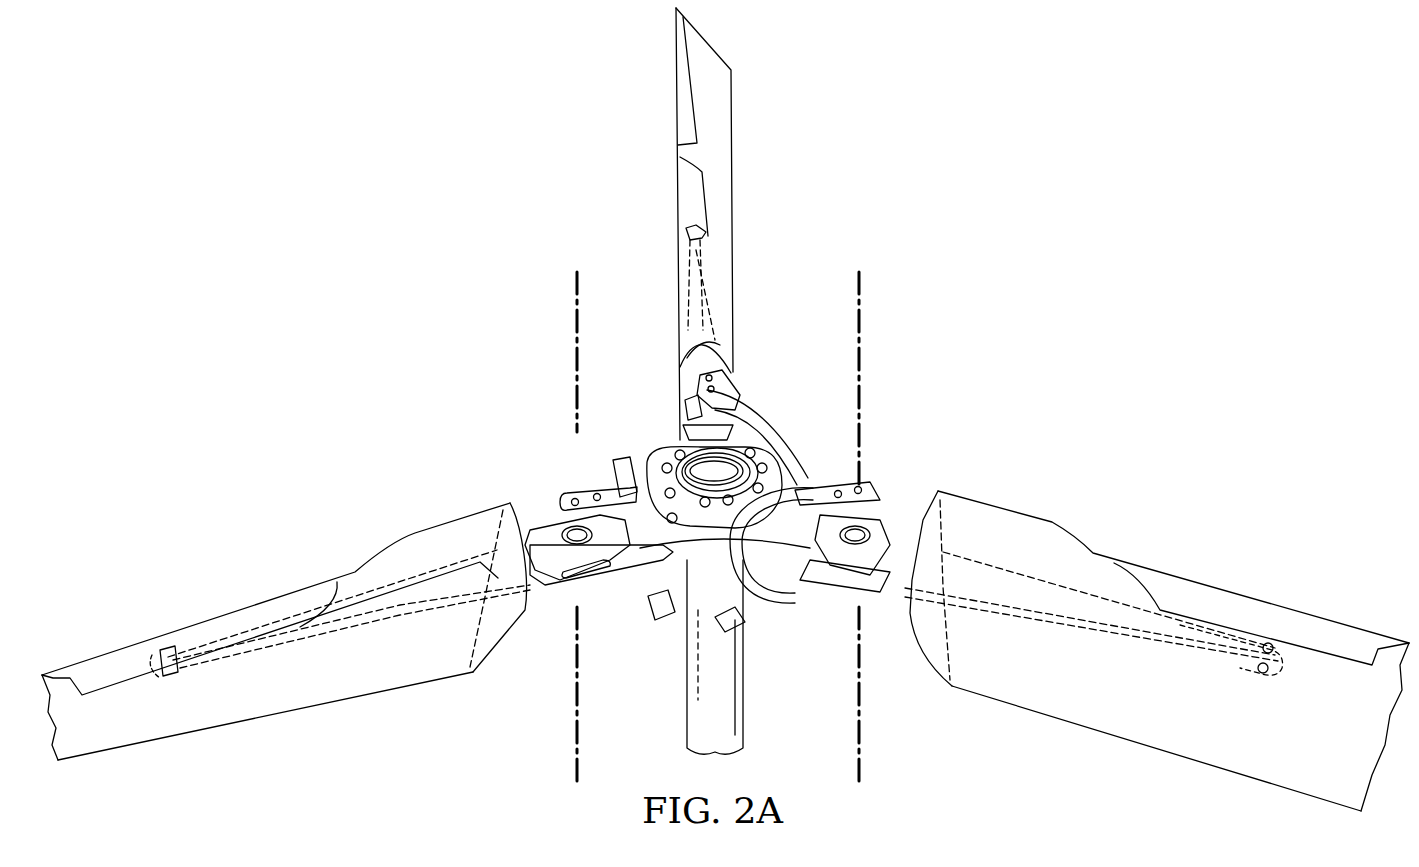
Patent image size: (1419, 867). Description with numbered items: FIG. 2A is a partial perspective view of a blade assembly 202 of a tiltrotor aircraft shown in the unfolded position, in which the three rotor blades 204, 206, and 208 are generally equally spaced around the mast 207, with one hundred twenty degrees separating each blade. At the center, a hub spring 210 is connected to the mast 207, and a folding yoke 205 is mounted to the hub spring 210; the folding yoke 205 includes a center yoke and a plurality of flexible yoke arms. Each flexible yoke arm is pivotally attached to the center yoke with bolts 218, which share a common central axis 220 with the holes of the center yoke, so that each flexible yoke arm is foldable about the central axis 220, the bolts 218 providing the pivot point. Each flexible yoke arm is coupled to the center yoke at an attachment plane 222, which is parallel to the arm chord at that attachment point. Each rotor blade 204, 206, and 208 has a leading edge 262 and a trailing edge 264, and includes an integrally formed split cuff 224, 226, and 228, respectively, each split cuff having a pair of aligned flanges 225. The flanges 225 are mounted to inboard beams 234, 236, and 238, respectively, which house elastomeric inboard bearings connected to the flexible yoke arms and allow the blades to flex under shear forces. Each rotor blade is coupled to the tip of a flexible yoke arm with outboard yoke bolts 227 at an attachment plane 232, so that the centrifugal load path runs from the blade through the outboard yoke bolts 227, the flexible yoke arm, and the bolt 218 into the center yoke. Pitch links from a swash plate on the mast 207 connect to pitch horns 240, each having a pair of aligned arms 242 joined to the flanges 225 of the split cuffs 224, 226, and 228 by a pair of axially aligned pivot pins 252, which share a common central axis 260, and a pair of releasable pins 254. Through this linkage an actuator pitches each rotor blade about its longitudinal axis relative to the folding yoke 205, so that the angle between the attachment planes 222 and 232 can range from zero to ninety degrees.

The blade assembly 202 is at (1120, 132).
The rotor blade 204 is at (128, 735).
The folding yoke 205 is at (652, 562).
The rotor blade 206 is at (733, 100).
The mast 207 is at (745, 722).
The rotor blade 208 is at (1283, 785).
The hub spring 210 is at (658, 472).
The bolt 218 is at (700, 415).
The central axis 220 is at (577, 775).
The attachment plane 222 is at (738, 398).
The split cuff 224 is at (402, 550).
The flange 225 is at (700, 362).
The split cuff 226 is at (712, 292).
The outboard yoke bolt 227 is at (733, 232).
The split cuff 228 is at (1028, 522).
The attachment plane 232 is at (688, 250).
The inboard beam 234 is at (458, 522).
The inboard beam 236 is at (700, 365).
The inboard beam 238 is at (926, 500).
The pitch horn 240 is at (792, 428).
The arm 242 is at (702, 397).
The pivot pin 252 is at (722, 378).
The releasable pin 254 is at (718, 370).
The central axis 260 is at (577, 283).
The leading edge 262 is at (680, 95).
The trailing edge 264 is at (733, 150).